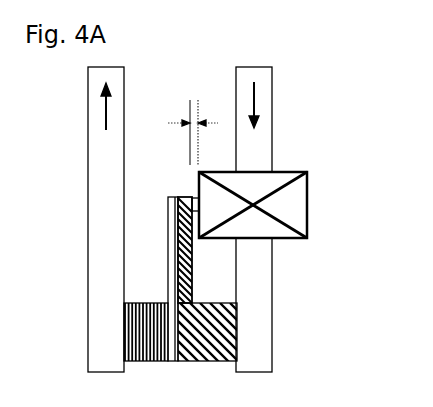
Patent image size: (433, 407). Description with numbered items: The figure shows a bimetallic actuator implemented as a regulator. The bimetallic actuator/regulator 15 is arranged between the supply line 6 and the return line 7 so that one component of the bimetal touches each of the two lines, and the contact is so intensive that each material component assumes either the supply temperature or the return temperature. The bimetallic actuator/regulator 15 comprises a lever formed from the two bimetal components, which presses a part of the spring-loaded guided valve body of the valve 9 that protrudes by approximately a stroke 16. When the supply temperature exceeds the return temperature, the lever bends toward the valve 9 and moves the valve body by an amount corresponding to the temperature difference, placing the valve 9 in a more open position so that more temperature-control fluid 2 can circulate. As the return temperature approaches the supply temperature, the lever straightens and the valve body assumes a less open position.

The temperature-control fluid 2 is at (105, 103).
The supply line 6 is at (88, 122).
The return line 7 is at (273, 128).
The valve 9 is at (292, 203).
The bimetallic actuator/regulator 15 is at (160, 274).
The stroke 16 is at (188, 132).